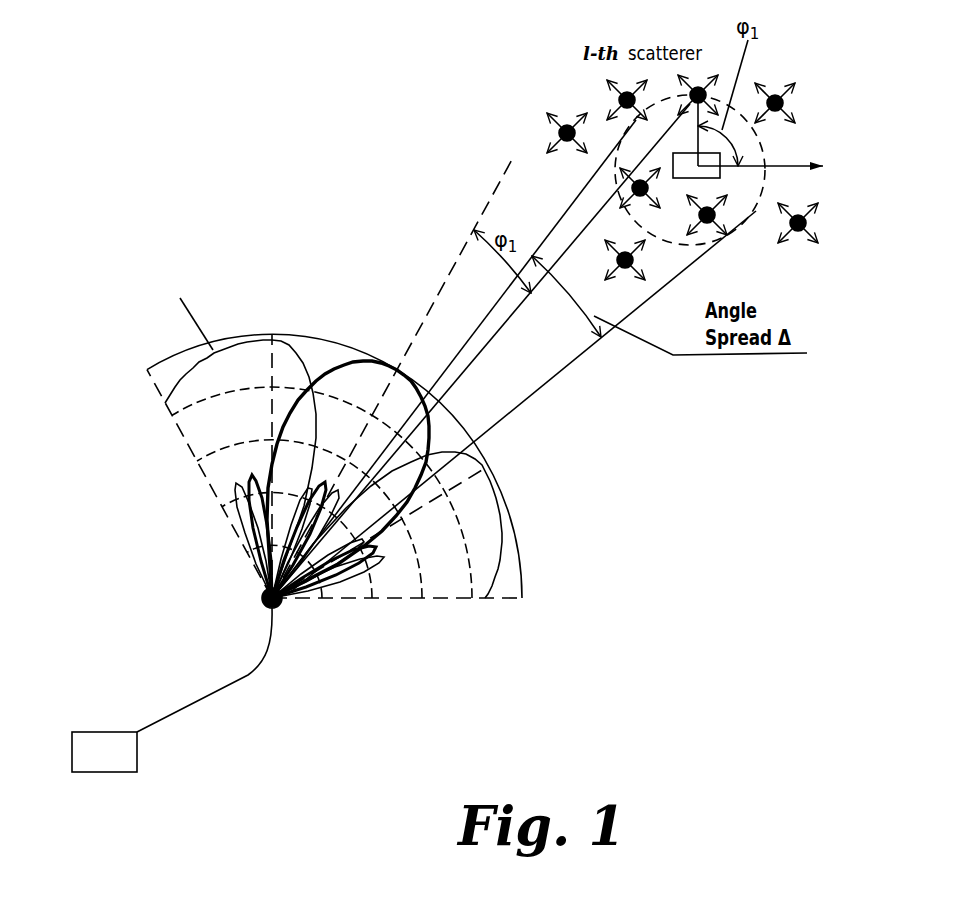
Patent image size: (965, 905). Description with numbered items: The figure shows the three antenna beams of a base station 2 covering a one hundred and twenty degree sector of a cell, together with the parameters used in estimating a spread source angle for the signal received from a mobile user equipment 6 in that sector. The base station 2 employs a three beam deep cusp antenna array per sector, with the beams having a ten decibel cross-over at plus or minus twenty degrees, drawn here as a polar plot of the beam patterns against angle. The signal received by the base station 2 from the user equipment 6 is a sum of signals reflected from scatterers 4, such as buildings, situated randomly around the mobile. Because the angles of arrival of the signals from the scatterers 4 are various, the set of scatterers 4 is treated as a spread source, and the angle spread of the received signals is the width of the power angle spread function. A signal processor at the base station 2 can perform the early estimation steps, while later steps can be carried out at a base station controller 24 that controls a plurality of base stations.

The base station 2 is at (282, 608).
The scatterers 4 is at (558, 129).
The mobile user equipment 6 is at (722, 176).
The base station controller 24 is at (92, 773).